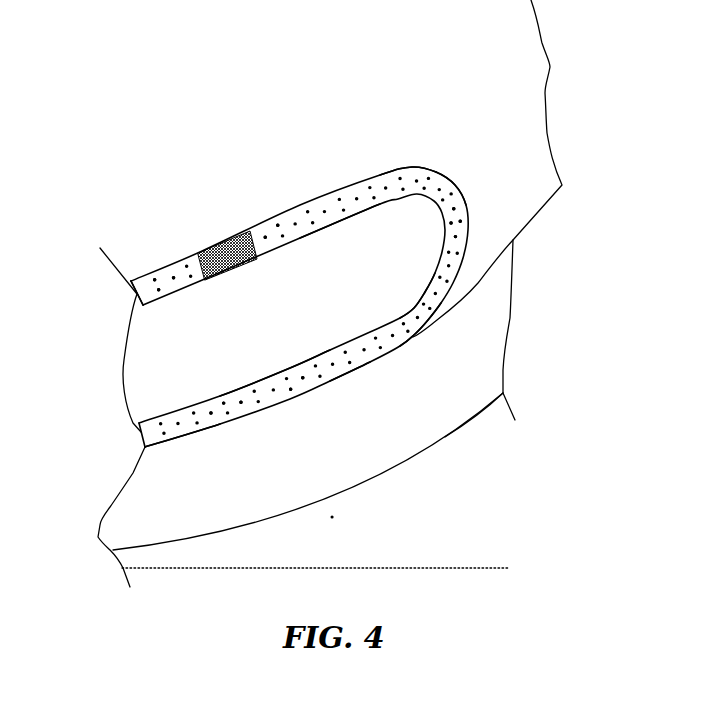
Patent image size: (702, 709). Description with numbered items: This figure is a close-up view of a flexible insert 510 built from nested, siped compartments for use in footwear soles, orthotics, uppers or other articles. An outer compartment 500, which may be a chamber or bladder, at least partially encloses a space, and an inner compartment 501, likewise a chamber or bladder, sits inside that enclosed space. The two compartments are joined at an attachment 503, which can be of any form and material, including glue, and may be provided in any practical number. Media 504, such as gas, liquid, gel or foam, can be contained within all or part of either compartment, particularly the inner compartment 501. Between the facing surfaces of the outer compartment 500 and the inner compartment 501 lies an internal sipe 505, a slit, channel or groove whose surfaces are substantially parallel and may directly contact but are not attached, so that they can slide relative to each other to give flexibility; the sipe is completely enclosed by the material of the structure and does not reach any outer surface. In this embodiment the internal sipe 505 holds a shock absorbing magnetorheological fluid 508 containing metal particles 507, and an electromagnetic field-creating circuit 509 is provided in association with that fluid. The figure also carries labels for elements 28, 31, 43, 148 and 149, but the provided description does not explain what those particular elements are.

The assembly 28 is at (184, 154).
The surface 31 is at (318, 500).
The baseline 43 is at (373, 567).
The tissue layer 148 is at (285, 180).
The tissue layer 149 is at (445, 437).
The outer compartment 500 is at (360, 173).
The inner compartment 501 is at (418, 167).
The attachment 503 is at (220, 247).
The media 504 is at (328, 247).
The internal sipe 505 is at (150, 287).
The metal particles 507 is at (410, 318).
The magnetorheological fluid 508 is at (138, 286).
The electromagnetic field-creating circuit 509 is at (252, 237).
The flexible insert 510 is at (442, 158).